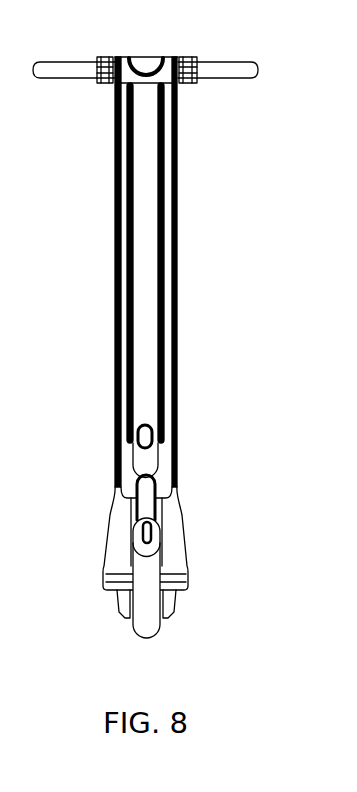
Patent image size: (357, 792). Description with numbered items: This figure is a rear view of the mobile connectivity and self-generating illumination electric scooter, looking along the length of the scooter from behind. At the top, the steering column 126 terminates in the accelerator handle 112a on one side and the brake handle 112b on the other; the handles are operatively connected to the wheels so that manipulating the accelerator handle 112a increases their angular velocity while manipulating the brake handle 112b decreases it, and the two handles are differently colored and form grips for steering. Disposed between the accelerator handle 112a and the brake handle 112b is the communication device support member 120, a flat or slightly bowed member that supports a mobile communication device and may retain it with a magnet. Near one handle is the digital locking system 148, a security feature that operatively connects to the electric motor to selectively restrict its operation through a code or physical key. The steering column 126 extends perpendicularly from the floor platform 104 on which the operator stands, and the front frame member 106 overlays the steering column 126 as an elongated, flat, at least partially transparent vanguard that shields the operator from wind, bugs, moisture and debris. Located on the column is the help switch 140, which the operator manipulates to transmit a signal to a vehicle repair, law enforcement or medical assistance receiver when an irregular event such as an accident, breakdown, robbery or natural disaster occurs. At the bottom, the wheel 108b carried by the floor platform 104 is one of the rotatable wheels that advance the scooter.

The floor platform 104 is at (173, 543).
The front frame member 106 is at (178, 180).
The wheel 108b is at (142, 623).
The accelerator handle 112a is at (238, 66).
The brake handle 112b is at (38, 62).
The communication device support member 120 is at (143, 68).
The steering column 126 is at (148, 218).
The help switch 140 is at (145, 107).
The digital locking system 148 is at (195, 84).